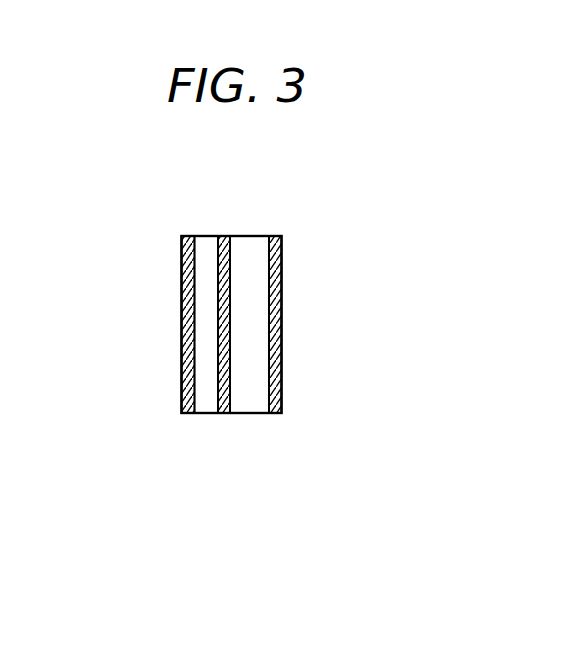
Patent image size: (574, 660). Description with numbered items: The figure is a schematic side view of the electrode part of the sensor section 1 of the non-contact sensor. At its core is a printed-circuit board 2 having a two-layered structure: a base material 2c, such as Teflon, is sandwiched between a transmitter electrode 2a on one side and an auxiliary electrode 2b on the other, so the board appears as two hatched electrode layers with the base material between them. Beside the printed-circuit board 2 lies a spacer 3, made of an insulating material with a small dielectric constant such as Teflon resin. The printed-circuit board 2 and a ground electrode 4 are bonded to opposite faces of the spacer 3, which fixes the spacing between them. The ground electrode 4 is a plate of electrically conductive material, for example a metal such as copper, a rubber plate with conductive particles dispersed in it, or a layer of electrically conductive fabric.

The sensor section 1 is at (310, 487).
The printed-circuit board 2 is at (223, 427).
The transmitter electrode 2a is at (182, 235).
The auxiliary electrode 2b is at (233, 236).
The base material 2c is at (208, 260).
The spacer 3 is at (252, 325).
The ground electrode 4 is at (280, 377).